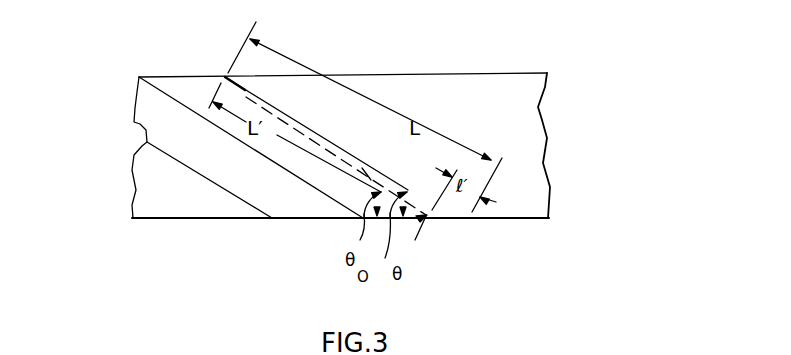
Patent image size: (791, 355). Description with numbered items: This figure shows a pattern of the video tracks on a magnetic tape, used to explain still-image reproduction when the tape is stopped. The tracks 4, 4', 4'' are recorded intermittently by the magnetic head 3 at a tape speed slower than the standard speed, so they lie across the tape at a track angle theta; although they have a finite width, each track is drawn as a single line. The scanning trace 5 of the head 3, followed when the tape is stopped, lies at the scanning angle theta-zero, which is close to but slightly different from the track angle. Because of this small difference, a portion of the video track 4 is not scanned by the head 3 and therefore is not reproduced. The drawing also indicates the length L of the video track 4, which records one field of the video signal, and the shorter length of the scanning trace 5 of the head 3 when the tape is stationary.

The magnetic head 3 is at (371, 141).
The video track 4 is at (325, 146).
The video track 4' is at (251, 133).
The video track 4'' is at (181, 161).
The scanning trace 5 is at (367, 175).